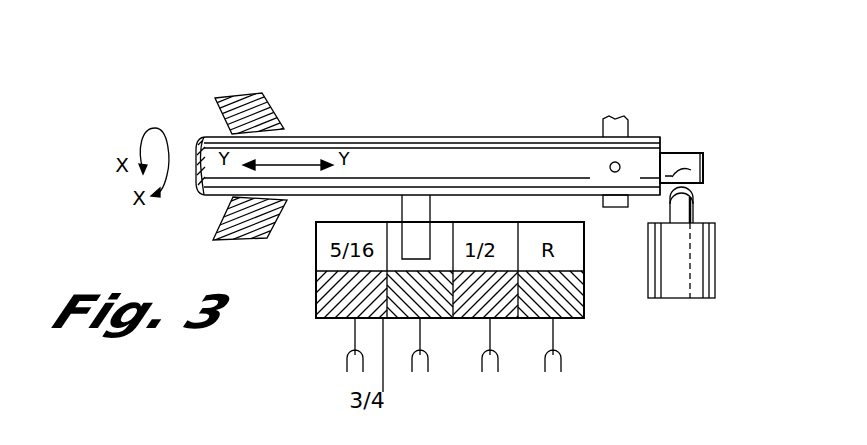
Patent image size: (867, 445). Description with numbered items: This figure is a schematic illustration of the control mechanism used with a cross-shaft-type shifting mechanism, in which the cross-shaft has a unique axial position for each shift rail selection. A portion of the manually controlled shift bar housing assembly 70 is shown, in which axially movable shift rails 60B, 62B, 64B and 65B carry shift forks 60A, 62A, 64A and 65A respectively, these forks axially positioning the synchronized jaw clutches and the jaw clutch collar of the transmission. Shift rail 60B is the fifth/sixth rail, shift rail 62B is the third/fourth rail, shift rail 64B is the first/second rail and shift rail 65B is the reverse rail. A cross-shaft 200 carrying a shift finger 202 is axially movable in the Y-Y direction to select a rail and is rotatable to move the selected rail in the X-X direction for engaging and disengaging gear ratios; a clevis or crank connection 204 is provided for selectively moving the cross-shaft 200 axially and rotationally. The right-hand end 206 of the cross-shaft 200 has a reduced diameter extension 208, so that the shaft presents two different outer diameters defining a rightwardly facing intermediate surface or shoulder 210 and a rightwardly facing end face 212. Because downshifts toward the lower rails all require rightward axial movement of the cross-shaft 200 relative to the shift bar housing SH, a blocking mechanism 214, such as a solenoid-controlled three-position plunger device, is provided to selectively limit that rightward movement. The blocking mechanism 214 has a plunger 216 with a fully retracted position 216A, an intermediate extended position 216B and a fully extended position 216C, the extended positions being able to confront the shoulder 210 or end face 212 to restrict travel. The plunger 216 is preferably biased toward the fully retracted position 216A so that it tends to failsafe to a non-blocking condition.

The shift bar housing SH is at (216, 104).
The shift bar housing assembly 70 is at (374, 133).
The cross-shaft 200 is at (441, 137).
The shift finger 202 is at (427, 250).
The clevis or crank connection 204 is at (636, 114).
The right-hand end of cross-shaft 206 is at (744, 138).
The reduced diameter extension 208 is at (687, 157).
The intermediate surface or shoulder 210 is at (661, 143).
The end face 212 is at (703, 155).
The blocking mechanism 214 is at (736, 279).
The plunger 216 is at (672, 215).
The fully retracted position 216A is at (691, 205).
The intermediate extended position 216B is at (694, 193).
The fully extended position 216C is at (705, 172).
The shift fork 60A is at (355, 342).
The fifth/sixth shift rail 60B is at (330, 320).
The shift fork 62A is at (428, 352).
The third/fourth shift rail 62B is at (395, 320).
The shift fork 64A is at (497, 344).
The first/second shift rail 64B is at (510, 320).
The shift fork 65A is at (556, 340).
The reverse shift rail 65B is at (580, 318).